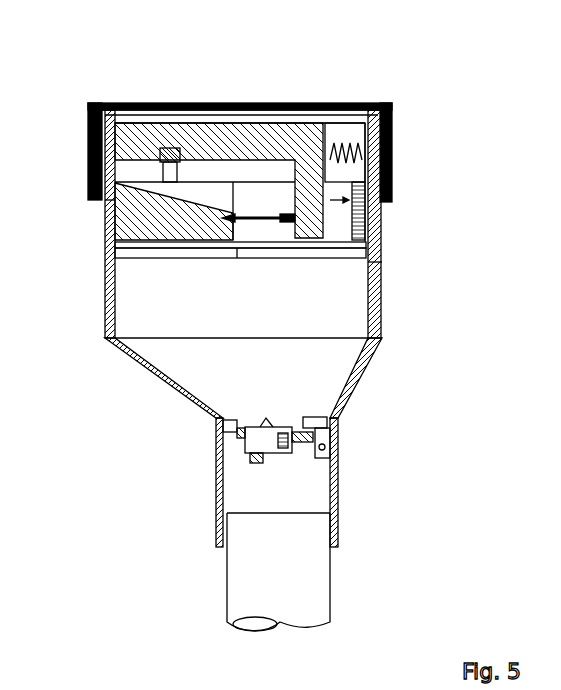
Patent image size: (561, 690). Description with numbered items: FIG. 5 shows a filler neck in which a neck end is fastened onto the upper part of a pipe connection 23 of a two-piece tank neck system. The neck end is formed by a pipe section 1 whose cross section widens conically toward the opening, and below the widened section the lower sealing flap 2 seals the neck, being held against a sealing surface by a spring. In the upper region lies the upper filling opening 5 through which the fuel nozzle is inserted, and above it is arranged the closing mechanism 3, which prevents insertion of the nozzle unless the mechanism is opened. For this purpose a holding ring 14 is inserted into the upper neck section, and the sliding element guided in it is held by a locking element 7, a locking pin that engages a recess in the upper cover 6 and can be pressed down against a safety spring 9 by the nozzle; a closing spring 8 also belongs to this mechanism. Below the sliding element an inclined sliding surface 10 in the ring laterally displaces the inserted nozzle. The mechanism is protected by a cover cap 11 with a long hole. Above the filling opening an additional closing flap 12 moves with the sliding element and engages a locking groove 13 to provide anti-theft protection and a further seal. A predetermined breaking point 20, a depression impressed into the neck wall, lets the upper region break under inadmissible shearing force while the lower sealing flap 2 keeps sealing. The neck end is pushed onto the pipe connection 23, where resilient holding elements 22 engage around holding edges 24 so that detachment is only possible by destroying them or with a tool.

The pipe section 1 is at (372, 360).
The lower sealing flap 2 is at (265, 445).
The closing mechanism 3 is at (90, 220).
The upper filling opening 5 is at (267, 260).
The upper cover 6 is at (300, 125).
The locking element 7 is at (88, 163).
The closing spring 8 is at (392, 132).
The safety spring 9 is at (107, 245).
The sliding surface 10 is at (107, 200).
The cover cap 11 is at (392, 107).
The additional closing flap 12 is at (240, 217).
The locking groove 13 is at (200, 250).
The holding ring 14 is at (378, 217).
The predetermined breaking point 20 is at (377, 265).
The resilient holding element 22 is at (322, 523).
The pipe connection 23 is at (278, 572).
The holding edge 24 is at (240, 520).